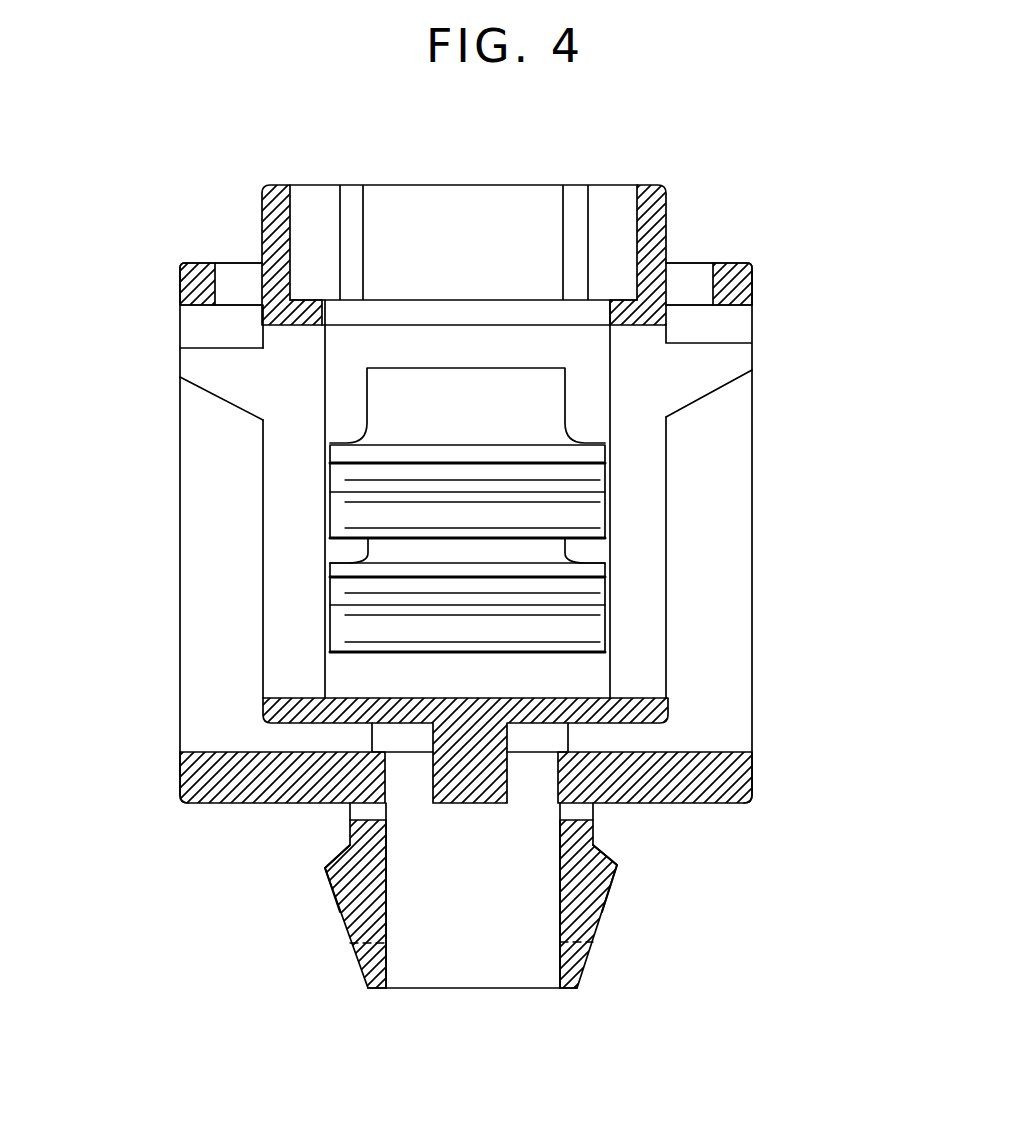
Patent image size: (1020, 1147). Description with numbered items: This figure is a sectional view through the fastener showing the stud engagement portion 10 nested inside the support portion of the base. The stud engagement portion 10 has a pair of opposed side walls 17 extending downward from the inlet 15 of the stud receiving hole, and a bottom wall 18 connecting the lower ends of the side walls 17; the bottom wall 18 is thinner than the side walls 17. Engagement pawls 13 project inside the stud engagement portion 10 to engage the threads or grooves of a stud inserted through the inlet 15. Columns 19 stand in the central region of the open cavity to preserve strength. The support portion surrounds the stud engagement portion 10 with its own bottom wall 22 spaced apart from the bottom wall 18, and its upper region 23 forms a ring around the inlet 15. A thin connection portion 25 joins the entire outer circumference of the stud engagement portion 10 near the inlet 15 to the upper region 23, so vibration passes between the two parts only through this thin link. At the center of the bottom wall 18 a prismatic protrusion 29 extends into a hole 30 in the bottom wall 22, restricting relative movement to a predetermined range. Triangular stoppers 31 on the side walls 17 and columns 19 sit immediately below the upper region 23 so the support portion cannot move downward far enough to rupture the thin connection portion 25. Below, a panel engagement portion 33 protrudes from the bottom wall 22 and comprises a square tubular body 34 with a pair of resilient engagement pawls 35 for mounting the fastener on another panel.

The stud engagement portion 10 is at (678, 452).
The engagement pawls 13 is at (535, 583).
The inlet 15 is at (400, 313).
The side walls 17 is at (652, 592).
The bottom wall 18 is at (670, 696).
The columns 19 is at (288, 572).
The bottom wall 22 is at (213, 803).
The upper region 23 is at (205, 268).
The thin connection portion 25 is at (232, 302).
The prismatic protrusion 29 is at (470, 730).
The hole 30 is at (427, 790).
The stoppers 31 is at (193, 362).
The panel engagement portion 33 is at (405, 990).
The square tubular body 34 is at (350, 930).
The engagement pawls 35 is at (326, 866).